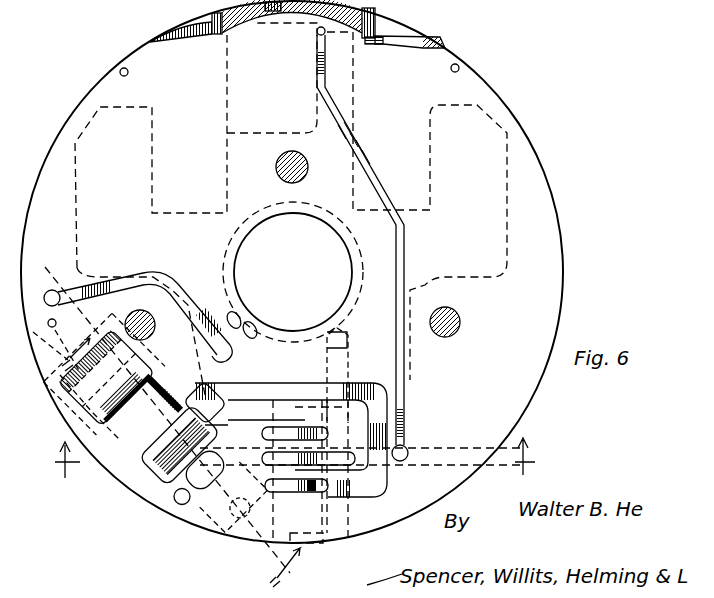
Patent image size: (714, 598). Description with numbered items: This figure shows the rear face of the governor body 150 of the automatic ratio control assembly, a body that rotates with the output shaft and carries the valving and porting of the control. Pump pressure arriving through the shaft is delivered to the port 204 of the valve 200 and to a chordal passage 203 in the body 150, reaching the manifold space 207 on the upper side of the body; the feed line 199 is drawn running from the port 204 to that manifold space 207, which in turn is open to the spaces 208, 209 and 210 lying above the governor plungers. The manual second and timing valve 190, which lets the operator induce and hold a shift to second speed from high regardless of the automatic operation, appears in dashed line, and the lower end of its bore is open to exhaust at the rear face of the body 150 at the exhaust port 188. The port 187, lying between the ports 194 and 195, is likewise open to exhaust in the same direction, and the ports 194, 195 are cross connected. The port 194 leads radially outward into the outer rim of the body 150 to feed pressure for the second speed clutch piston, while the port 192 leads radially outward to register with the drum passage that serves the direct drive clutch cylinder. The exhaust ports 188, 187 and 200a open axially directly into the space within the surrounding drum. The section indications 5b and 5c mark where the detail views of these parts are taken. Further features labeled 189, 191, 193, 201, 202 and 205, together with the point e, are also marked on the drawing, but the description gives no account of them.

The governor body 150 is at (546, 176).
The exhaust port 187 is at (53, 408).
The exhaust port 188 is at (215, 540).
The spring detent 189 is at (196, 312).
The manual 2nd and timing valve 190 is at (213, 466).
The cylinder housing 191 is at (162, 470).
The port 192 is at (192, 495).
The piston rod 193 is at (118, 447).
The port 194 is at (152, 372).
The port 195 is at (134, 314).
The feed line 199 is at (405, 392).
The valve 200 is at (338, 488).
The exhaust port 200a is at (352, 543).
The pin slot 201 is at (280, 487).
The lever arm 202 is at (131, 289).
The chordal passage 203 is at (268, 392).
The port 204 is at (373, 465).
The guide 205 is at (320, 430).
The manifold space 207 is at (221, 36).
The space above plunger 208 is at (396, 27).
The space above plunger 209 is at (288, 12).
The space above plunger 210 is at (222, 33).
The detail view indication 5b is at (183, 427).
The detail view indication 5c is at (290, 458).
The point e is at (262, 457).